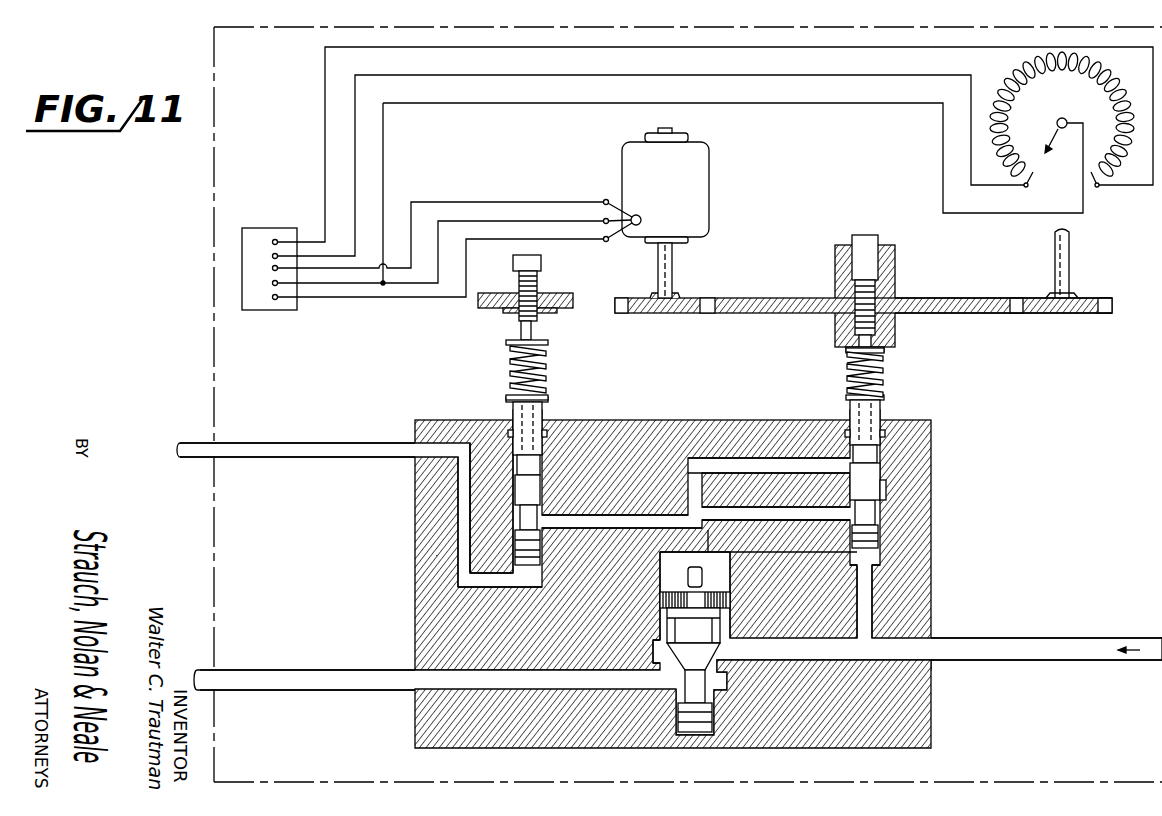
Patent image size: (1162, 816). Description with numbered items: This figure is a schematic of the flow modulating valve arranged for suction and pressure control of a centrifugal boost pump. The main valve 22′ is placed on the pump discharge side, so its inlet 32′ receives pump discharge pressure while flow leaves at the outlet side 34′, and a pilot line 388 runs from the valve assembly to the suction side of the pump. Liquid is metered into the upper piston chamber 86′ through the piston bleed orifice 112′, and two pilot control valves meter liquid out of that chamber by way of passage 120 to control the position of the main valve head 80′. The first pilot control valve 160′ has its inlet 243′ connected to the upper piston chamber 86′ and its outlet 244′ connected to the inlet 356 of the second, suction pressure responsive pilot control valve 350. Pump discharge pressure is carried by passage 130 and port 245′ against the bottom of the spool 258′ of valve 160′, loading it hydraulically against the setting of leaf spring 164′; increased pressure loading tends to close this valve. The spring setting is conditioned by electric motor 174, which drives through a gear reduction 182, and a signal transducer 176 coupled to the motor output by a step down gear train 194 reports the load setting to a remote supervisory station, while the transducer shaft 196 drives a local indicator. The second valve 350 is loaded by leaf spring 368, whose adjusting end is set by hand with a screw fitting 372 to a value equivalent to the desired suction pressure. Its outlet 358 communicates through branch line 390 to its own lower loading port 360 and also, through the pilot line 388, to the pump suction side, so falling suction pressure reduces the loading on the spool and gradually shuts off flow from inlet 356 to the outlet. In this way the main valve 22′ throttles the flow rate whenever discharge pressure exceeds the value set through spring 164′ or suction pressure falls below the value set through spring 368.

The electric motor 174 is at (710, 196).
The signal transducer 176 is at (1054, 160).
The transducer shaft 196 is at (1069, 262).
The gear reduction 182 is at (703, 315).
The step down gear train 194 is at (1000, 315).
The screw fitting 372 is at (541, 262).
The pilot line 388 is at (193, 442).
The branch line 390 is at (455, 531).
The outlet 358 is at (488, 463).
The inlet 356 is at (566, 521).
The lower valve loading port 360 is at (513, 590).
The outlet 244′ is at (833, 461).
The inlet 243′ is at (833, 511).
The passage 120 is at (773, 520).
The piston bleed orifice 112′ is at (738, 566).
The upper piston chamber 86′ is at (665, 588).
The main valve head 80′ is at (660, 652).
The passage 130 is at (872, 602).
The port 245′ is at (872, 576).
The outlet side 34′ is at (415, 690).
The inlet 32′ is at (935, 661).
The pilot control valve 350 is at (559, 413).
The leaf spring 368 is at (546, 365).
The pilot control valve 160′ is at (893, 420).
The spool 258′ is at (880, 498).
The leaf spring 164′ is at (885, 373).
The main valve 22′ is at (730, 609).